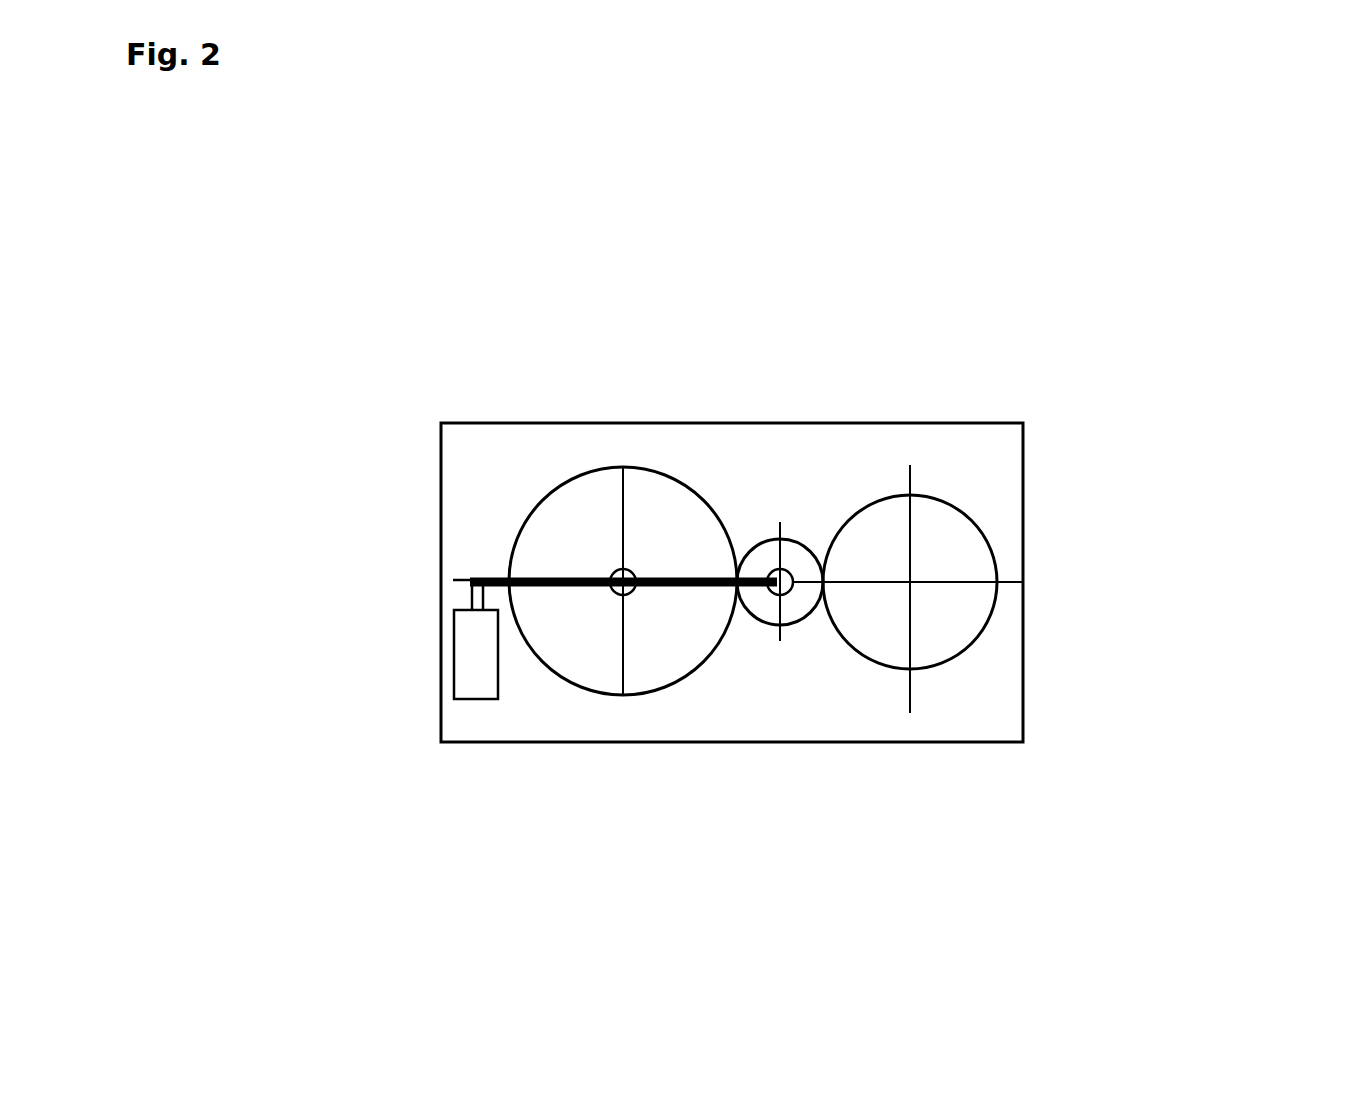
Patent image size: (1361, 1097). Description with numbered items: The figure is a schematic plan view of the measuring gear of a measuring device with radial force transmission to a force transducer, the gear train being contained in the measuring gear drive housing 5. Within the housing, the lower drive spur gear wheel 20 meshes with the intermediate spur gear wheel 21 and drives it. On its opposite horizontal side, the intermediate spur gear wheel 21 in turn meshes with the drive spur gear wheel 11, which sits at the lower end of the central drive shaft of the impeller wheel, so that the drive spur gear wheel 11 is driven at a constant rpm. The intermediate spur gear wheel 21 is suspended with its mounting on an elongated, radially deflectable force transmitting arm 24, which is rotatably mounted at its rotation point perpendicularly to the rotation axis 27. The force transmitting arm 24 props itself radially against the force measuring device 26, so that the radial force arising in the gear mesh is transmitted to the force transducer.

The measuring gear drive housing 5 is at (1023, 481).
The drive spur gear wheel 11 is at (583, 653).
The lower drive spur gear wheel 20 is at (965, 625).
The intermediate spur gear wheel 21 is at (808, 597).
The force transmitting arm 24 is at (693, 586).
The force measuring device 26 is at (483, 639).
The rotation axis 27 is at (613, 573).